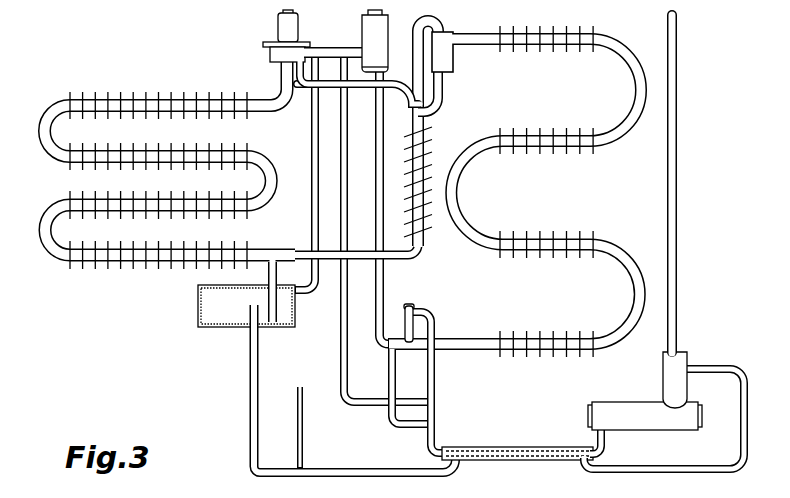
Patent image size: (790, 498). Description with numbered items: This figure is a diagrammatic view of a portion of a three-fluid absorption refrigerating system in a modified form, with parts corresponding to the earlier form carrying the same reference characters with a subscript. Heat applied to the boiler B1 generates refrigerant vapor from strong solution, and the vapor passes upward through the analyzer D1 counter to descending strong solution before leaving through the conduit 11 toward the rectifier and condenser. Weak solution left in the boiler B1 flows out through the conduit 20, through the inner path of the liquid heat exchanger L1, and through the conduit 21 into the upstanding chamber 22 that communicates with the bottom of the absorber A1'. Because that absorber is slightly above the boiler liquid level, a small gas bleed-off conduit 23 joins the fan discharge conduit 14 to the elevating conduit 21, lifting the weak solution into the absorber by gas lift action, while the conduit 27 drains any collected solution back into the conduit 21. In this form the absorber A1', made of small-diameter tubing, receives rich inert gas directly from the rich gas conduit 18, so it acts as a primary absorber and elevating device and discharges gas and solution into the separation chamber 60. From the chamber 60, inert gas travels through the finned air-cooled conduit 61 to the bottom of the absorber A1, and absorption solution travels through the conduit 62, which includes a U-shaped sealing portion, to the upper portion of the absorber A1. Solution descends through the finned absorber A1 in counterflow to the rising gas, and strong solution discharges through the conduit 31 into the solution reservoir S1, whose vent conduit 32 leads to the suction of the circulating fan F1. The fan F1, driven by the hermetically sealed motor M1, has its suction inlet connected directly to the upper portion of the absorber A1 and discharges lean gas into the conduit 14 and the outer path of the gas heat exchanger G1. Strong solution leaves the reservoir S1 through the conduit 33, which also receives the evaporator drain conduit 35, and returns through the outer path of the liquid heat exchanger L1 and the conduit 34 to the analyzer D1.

The absorber A1 is at (171, 163).
The electrical motor M1 is at (282, 26).
The circulating fan F1 is at (269, 54).
The conduit 14 is at (323, 50).
The gas heat exchanger G1 is at (363, 27).
The separation chamber 60 is at (447, 62).
The conduit 62 is at (443, 88).
The finned air-cooled conduit 61 is at (425, 150).
The rich gas conduit 18 is at (375, 202).
The absorber A1' is at (514, 191).
The conduit 11 is at (677, 277).
The upstanding chamber 22 is at (409, 304).
The conduit 31 is at (270, 273).
The vent conduit 32 is at (303, 294).
The solution reservoir S1 is at (198, 306).
The gas bleed-off conduit 23 is at (346, 350).
The conduit 33 is at (258, 373).
The drain conduit 35 is at (303, 432).
The conduit 27 is at (388, 418).
The conduit 21 is at (435, 415).
The liquid heat exchanger L1 is at (530, 447).
The boiler B1 is at (613, 402).
The analyzer D1 is at (672, 380).
The conduit 20 is at (605, 443).
The conduit 34 is at (745, 445).